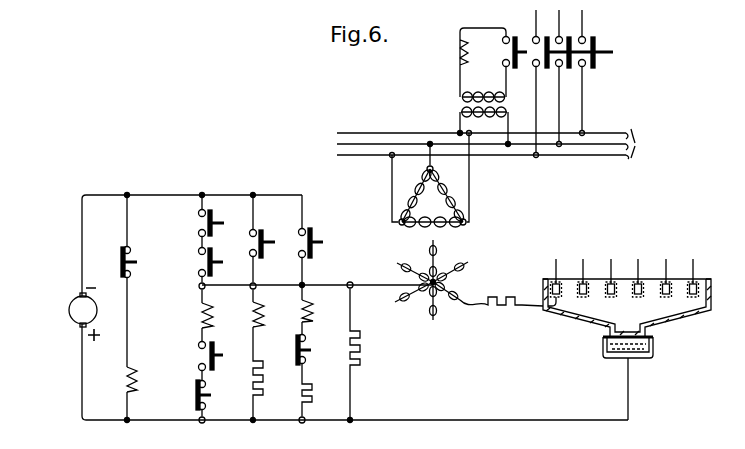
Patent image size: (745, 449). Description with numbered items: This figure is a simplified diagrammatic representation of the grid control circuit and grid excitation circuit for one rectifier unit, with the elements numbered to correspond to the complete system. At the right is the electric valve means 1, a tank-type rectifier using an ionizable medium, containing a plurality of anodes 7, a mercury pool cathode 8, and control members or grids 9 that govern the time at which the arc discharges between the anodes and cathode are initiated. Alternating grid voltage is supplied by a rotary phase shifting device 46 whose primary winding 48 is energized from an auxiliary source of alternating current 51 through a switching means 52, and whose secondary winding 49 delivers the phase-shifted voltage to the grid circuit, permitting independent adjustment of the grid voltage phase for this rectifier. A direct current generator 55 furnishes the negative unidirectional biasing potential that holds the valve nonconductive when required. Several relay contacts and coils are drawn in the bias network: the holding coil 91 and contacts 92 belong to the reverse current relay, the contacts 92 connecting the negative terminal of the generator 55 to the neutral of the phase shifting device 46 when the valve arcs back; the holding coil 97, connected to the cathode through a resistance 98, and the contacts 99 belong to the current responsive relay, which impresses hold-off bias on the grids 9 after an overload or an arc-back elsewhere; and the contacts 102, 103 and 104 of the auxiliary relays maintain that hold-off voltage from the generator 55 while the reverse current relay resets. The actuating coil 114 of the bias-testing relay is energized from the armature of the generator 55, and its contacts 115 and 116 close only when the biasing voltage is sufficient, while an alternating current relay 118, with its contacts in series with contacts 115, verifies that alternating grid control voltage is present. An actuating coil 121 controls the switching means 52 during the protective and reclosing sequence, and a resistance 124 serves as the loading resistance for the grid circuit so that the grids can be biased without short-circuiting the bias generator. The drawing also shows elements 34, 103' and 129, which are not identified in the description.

The electric valve means 1 is at (738, 307).
The anodes 7 is at (609, 281).
The mercury pool cathode 8 is at (649, 349).
The control members or grids 9 is at (561, 298).
The switch 34 is at (210, 355).
The rotary phase shifting device 46 is at (401, 251).
The primary winding 48 is at (430, 180).
The secondary winding 49 is at (437, 318).
The auxiliary source of alternating current 51 is at (496, 144).
The switching means 52 is at (595, 63).
The direct current generator 55 is at (63, 315).
The holding coil 91 is at (312, 306).
The contacts 92 is at (304, 231).
The holding coil 97 is at (259, 321).
The resistance 98 is at (259, 392).
The contacts 99 is at (201, 254).
The contacts 102 is at (254, 231).
The contacts 103 is at (319, 350).
The resistance 103' is at (324, 394).
The contacts 104 is at (199, 396).
The actuating coil 114 is at (130, 381).
The contacts 115 is at (515, 38).
The contacts 116 is at (200, 215).
The alternating current relay 118 is at (463, 62).
The actuating coil 121 is at (209, 318).
The resistance 124 is at (357, 348).
The switch 129 is at (131, 275).